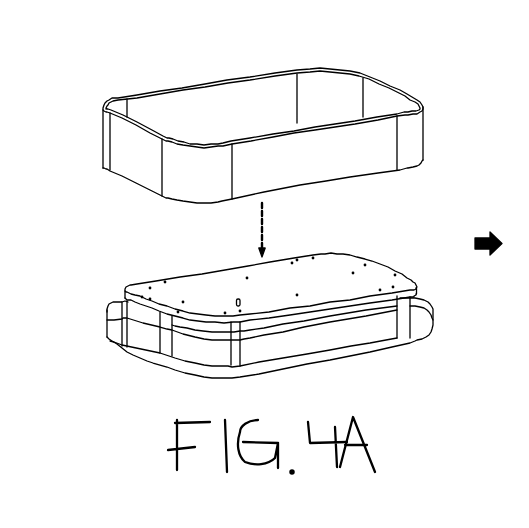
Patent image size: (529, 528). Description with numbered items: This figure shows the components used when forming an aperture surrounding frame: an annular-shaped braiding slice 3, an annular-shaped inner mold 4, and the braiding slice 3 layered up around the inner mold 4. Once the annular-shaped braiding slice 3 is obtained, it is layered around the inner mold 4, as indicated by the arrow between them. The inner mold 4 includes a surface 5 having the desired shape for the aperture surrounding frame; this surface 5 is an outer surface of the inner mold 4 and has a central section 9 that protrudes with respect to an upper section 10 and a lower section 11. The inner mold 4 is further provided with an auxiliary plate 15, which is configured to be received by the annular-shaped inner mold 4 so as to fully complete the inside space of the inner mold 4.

The annular-shaped braiding slice 3 is at (210, 83).
The inner mold 4 is at (147, 251).
The surface 5 is at (442, 318).
The central section 9 is at (122, 325).
The upper section 10 is at (125, 300).
The lower section 11 is at (140, 360).
The auxiliary plate 15 is at (340, 265).